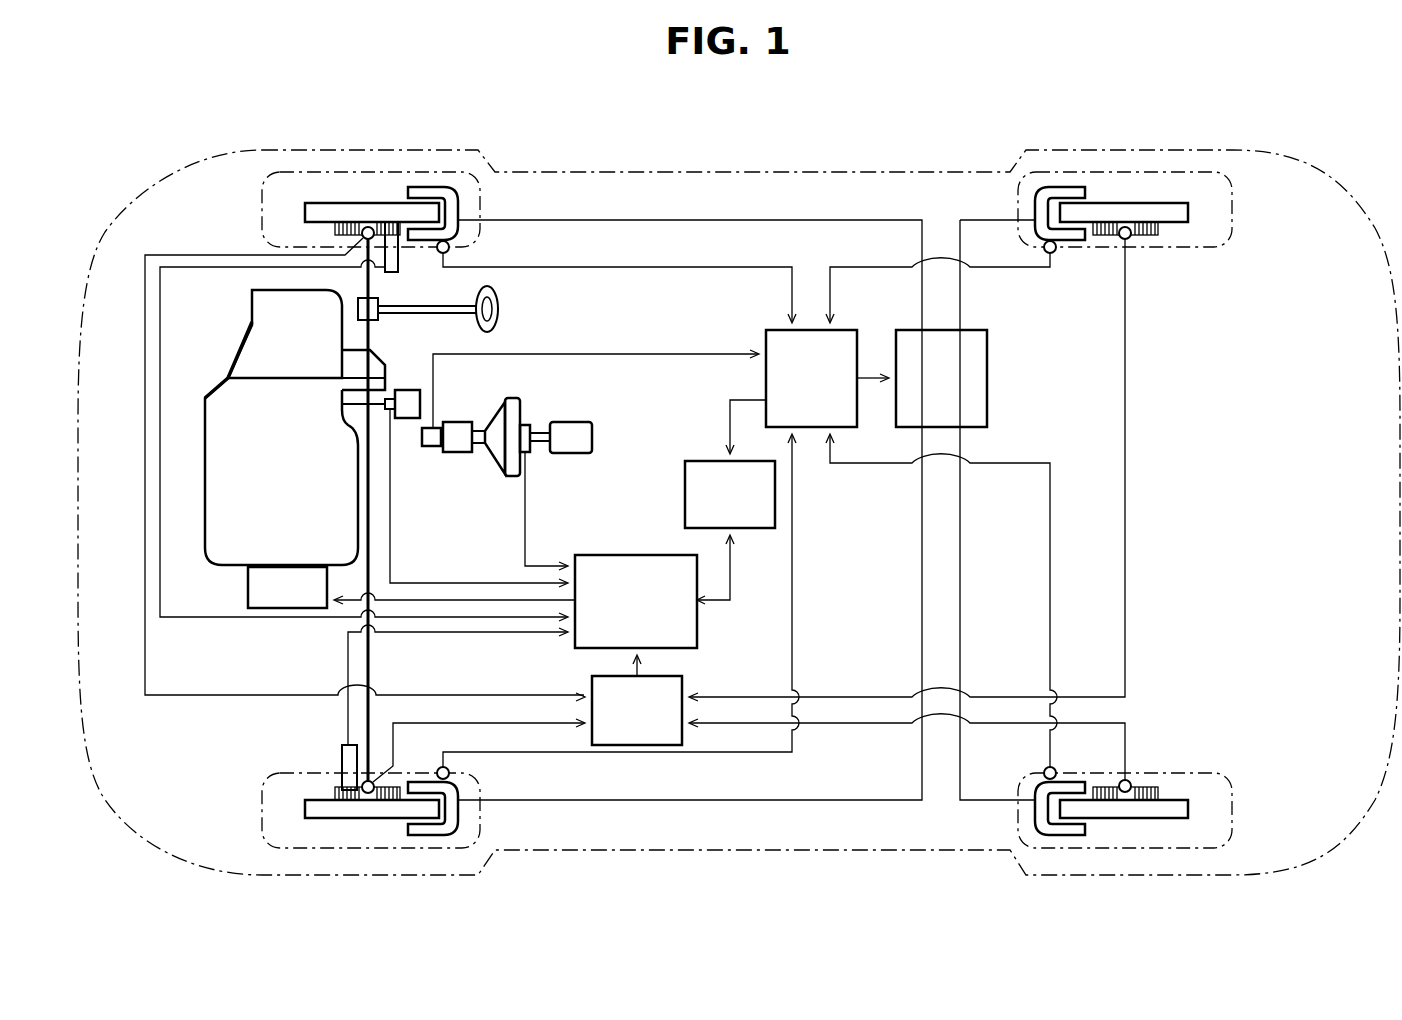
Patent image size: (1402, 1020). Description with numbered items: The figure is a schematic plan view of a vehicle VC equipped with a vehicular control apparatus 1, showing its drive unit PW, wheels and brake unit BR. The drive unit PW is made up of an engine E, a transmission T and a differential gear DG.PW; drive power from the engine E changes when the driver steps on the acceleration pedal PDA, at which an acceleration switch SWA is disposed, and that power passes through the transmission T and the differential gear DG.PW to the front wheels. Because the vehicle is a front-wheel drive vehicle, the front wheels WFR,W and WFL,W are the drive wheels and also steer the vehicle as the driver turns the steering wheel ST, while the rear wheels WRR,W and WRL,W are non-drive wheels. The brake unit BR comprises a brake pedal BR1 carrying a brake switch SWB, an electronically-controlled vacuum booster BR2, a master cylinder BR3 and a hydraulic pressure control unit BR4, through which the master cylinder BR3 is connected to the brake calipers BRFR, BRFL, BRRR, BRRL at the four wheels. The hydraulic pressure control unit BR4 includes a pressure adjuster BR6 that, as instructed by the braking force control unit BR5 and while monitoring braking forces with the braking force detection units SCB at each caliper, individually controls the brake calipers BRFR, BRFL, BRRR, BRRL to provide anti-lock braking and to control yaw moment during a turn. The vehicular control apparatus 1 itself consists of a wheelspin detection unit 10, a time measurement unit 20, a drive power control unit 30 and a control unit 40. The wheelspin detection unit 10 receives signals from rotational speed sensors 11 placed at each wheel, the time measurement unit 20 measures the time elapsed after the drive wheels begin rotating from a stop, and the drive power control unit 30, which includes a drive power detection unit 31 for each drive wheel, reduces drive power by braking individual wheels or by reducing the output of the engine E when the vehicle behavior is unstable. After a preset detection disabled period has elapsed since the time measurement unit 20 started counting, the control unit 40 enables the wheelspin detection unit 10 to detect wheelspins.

The vehicular control apparatus 1 is at (832, 128).
The vehicle VC is at (1327, 166).
The transmission T is at (283, 346).
The engine E is at (278, 507).
The drive unit PW is at (213, 398).
The differential gear DG.PW is at (356, 380).
The acceleration switch SWA is at (385, 408).
The drive power control unit 30 is at (277, 600).
The steering wheel ST is at (500, 308).
The acceleration pedal PDA is at (408, 390).
The brake pedal BR1 is at (593, 438).
The electronically-controlled vacuum booster BR2 is at (515, 398).
The master cylinder BR3 is at (462, 453).
The hydraulic pressure control unit BR4 is at (430, 448).
The braking force control unit BR5 is at (793, 389).
The pressure adjuster BR6 is at (922, 389).
The brake switch SWB is at (530, 425).
The brake unit BR is at (633, 160).
The time measurement unit 20 is at (718, 507).
The control unit 40 is at (625, 613).
The wheelspin detection unit 10 is at (626, 722).
The rotational speed sensors 11 is at (371, 227).
The braking force detection units SCB is at (450, 249).
The drive power detection unit 31 is at (399, 262).
The front right drive wheel WFR,W is at (386, 166).
The front left drive wheel WFL,W is at (386, 850).
The rear right non-drive wheel WRR,W is at (1152, 166).
The rear left non-drive wheel WRL,W is at (1152, 850).
The brake caliper BRFR is at (463, 180).
The brake caliper BRFL is at (462, 843).
The brake caliper BRRR is at (1030, 185).
The brake caliper BRRL is at (1030, 840).